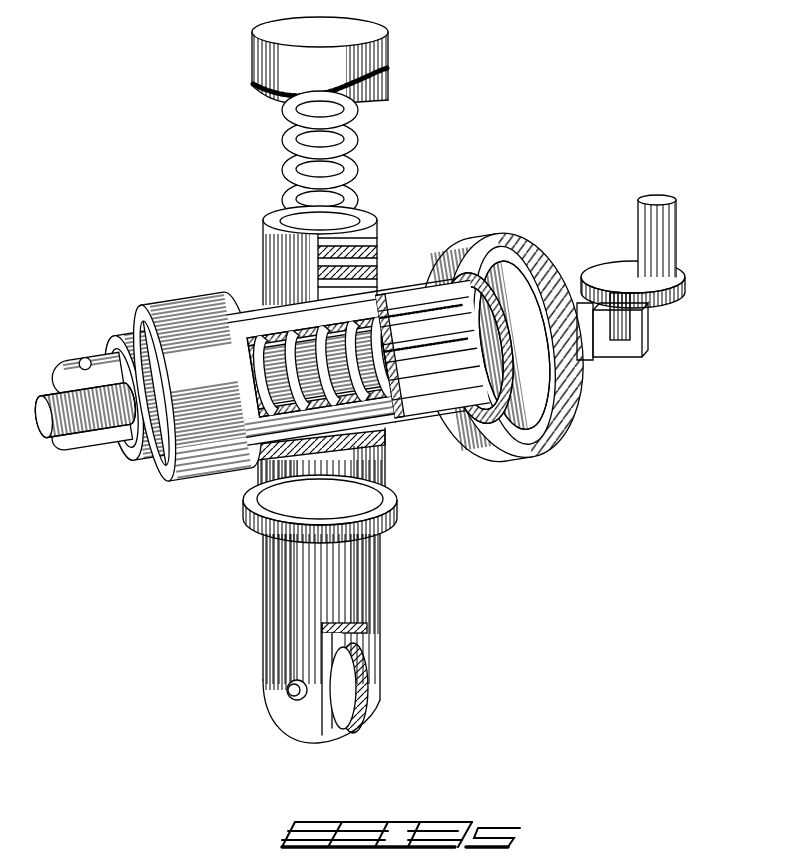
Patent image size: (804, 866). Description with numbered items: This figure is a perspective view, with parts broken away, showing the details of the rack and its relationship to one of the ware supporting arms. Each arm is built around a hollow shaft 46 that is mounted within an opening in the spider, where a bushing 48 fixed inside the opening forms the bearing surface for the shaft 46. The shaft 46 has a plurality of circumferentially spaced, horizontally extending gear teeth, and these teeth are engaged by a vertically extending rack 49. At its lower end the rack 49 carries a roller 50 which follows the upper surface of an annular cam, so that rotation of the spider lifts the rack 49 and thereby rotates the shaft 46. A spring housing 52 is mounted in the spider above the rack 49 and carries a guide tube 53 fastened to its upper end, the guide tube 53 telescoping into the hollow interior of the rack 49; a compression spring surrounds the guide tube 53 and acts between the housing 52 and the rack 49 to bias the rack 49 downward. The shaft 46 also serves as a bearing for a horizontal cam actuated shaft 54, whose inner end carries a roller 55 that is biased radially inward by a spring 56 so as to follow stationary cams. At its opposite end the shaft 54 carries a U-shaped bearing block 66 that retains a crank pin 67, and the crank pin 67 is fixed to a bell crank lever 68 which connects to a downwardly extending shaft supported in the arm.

The hollow shaft 46 is at (407, 317).
The bushing 48 is at (483, 287).
The rack 49 is at (360, 240).
The roller 50 is at (366, 718).
The spring housing 52 is at (373, 52).
The guide tube 53 is at (348, 137).
The horizontal cam actuated shaft 54 is at (280, 412).
The roller 55 is at (55, 413).
The spring 56 is at (283, 397).
The bearing block 66 is at (637, 332).
The crank pin 67 is at (625, 341).
The bell crank lever 68 is at (690, 286).